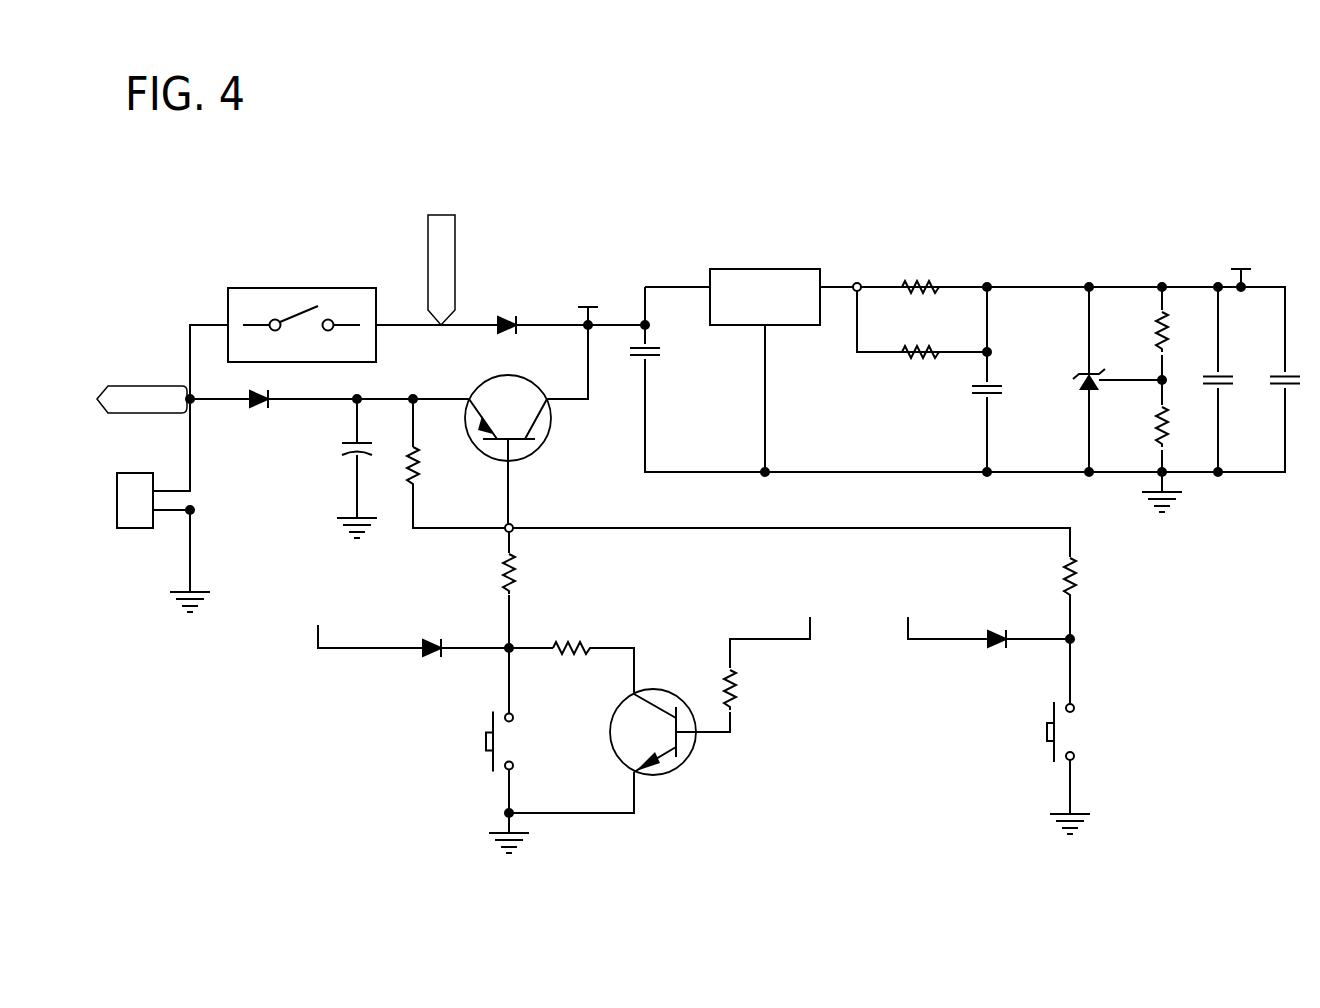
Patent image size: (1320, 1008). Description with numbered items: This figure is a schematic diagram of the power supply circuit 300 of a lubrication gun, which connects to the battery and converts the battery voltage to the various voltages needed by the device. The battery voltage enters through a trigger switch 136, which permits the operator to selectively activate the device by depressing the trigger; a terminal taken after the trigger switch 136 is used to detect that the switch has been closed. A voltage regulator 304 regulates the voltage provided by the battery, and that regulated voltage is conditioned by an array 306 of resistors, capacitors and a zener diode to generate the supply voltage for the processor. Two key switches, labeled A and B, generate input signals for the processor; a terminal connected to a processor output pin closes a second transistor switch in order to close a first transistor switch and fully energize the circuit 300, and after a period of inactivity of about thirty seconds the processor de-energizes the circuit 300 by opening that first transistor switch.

The trigger switch 136 is at (305, 287).
The power supply circuit 300 is at (788, 198).
The voltage regulator 304 is at (788, 313).
The array of resistors, capacitors and a zener diode 306 is at (1252, 166).